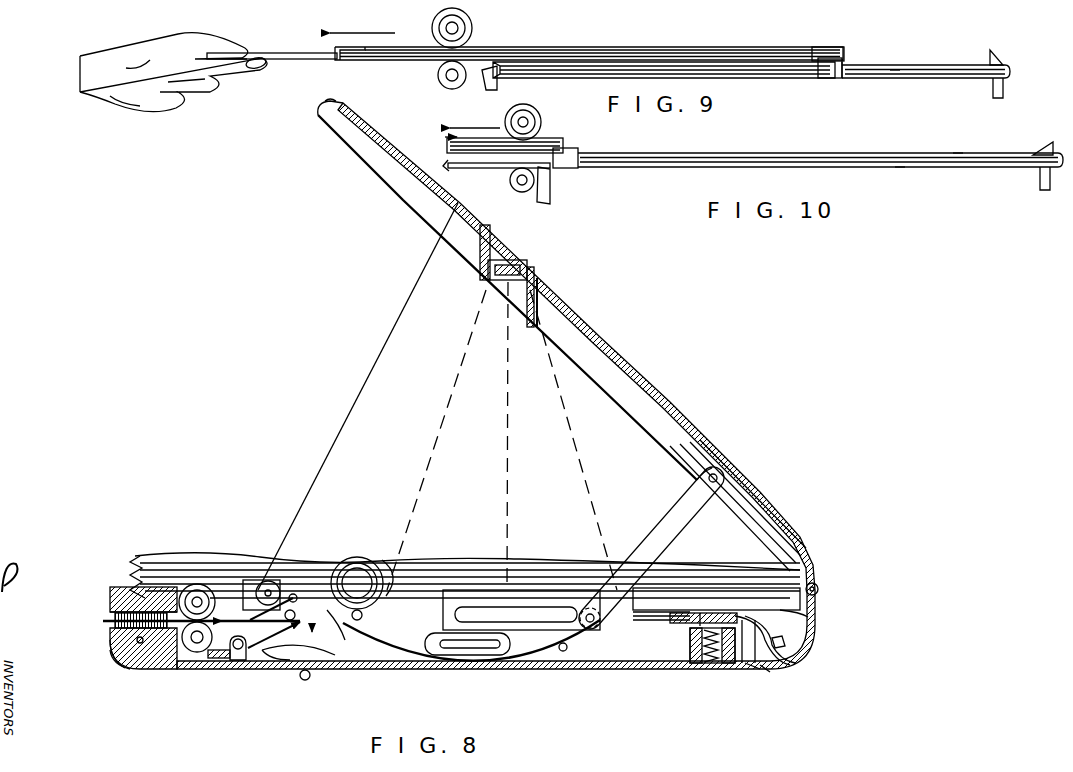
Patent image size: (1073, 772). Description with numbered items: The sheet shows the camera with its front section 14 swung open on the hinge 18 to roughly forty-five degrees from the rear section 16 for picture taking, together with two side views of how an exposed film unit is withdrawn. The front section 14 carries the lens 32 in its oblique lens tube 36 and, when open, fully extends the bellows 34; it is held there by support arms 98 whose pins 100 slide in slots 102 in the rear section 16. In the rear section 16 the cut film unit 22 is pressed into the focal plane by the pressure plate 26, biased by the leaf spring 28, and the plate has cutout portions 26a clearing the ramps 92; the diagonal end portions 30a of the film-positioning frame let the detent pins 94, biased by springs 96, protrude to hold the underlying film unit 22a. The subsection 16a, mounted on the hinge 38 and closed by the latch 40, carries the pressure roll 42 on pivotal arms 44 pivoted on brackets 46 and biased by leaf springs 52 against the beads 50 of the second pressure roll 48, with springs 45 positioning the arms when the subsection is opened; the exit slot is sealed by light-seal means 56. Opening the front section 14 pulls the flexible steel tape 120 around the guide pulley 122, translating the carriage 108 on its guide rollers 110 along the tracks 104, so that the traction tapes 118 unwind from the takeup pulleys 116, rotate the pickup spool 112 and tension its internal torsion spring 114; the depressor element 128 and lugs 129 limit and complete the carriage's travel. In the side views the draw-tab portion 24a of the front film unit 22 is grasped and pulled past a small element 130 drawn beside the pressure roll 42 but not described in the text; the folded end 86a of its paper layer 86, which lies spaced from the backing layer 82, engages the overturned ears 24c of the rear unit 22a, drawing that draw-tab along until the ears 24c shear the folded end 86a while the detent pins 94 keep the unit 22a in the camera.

In FIG. 8, the front section 14 is at (625, 357).
In FIG. 8, the rear section 16 is at (400, 670).
In FIG. 8, the pivotally mounted subsection 16a is at (150, 672).
In FIG. 8, the hinge 18 is at (820, 587).
In FIG. 9, the cut film unit 22 is at (613, 48).
In FIG. 10, the cut film unit 22 is at (446, 137).
In FIG. 8, the cut film unit 22 is at (765, 672).
In FIG. 9, the rear film unit 22a is at (913, 64).
In FIG. 10, the rear film unit 22a is at (881, 154).
In FIG. 9, the outwardly extending portion of draw-tab 24a is at (290, 35).
In FIG. 10, the outwardly extending portion of draw-tab 24a is at (496, 175).
In FIG. 8, the outwardly extending portion of draw-tab 24a is at (103, 625).
In FIG. 9, the overturned ears of draw-tab 24c is at (833, 70).
In FIG. 10, the overturned ears of draw-tab 24c is at (573, 155).
In FIG. 8, the pressure plate 26 is at (418, 620).
In FIG. 8, the cutout portions of pressure plate 26a is at (753, 670).
In FIG. 8, the leaf spring 28 is at (560, 650).
In FIG. 8, the diagonally extending end portions of film-positioning frame 30a is at (768, 664).
In FIG. 8, the lens 32 is at (514, 261).
In FIG. 8, the bellows 34 is at (157, 555).
In FIG. 8, the lens tube 36 is at (537, 292).
In FIG. 8, the hinge 38 is at (310, 678).
In FIG. 8, the latch 40 is at (140, 668).
In FIG. 9, the pressure roll 42 is at (440, 78).
In FIG. 10, the pressure roll 42 is at (520, 191).
In FIG. 8, the pressure roll 42 is at (198, 652).
In FIG. 8, the pivotal arm 44 is at (280, 667).
In FIG. 8, the spring 45 is at (207, 667).
In FIG. 8, the supporting stud or bracket 46 is at (243, 657).
In FIG. 9, the second pressure roll 48 is at (472, 28).
In FIG. 10, the second pressure roll 48 is at (504, 117).
In FIG. 8, the second pressure roll 48 is at (200, 584).
In FIG. 8, the shoulder or bead 50 is at (140, 564).
In FIG. 8, the leaf spring 52 is at (355, 627).
In FIG. 8, the light-seal means 56 is at (112, 628).
In FIG. 9, the backing layer 82 is at (892, 74).
In FIG. 10, the backing layer 82 is at (958, 163).
In FIG. 9, the thin paper layer 86 is at (847, 78).
In FIG. 10, the thin paper layer 86 is at (908, 169).
In FIG. 9, the folded end portions of paper layer 86a is at (845, 55).
In FIG. 8, the guide or ramp 92 is at (680, 650).
In FIG. 9, the detent pin 94 is at (988, 88).
In FIG. 10, the detent pin 94 is at (1043, 180).
In FIG. 8, the detent pin 94 is at (700, 658).
In FIG. 8, the spring 96 is at (727, 657).
In FIG. 8, the support arm 98 is at (680, 525).
In FIG. 8, the pin 100 is at (602, 604).
In FIG. 8, the slot 102 is at (523, 608).
In FIG. 8, the track 104 is at (690, 613).
In FIG. 8, the movable carriage 108 is at (327, 612).
In FIG. 8, the guide roller 110 is at (305, 610).
In FIG. 8, the pickup spool 112 is at (357, 557).
In FIG. 8, the internal torsion spring 114 is at (376, 560).
In FIG. 8, the takeup pulley or reel 116 is at (390, 577).
In FIG. 8, the traction tape 118 is at (809, 617).
In FIG. 8, the flexible steel tape 120 is at (313, 480).
In FIG. 8, the guide pulley 122 is at (272, 585).
In FIG. 8, the blade-like depressor element 128 is at (240, 600).
In FIG. 8, the lug 129 is at (787, 641).
In FIG. 9, the tab 130 is at (493, 88).
In FIG. 10, the tab 130 is at (551, 185).